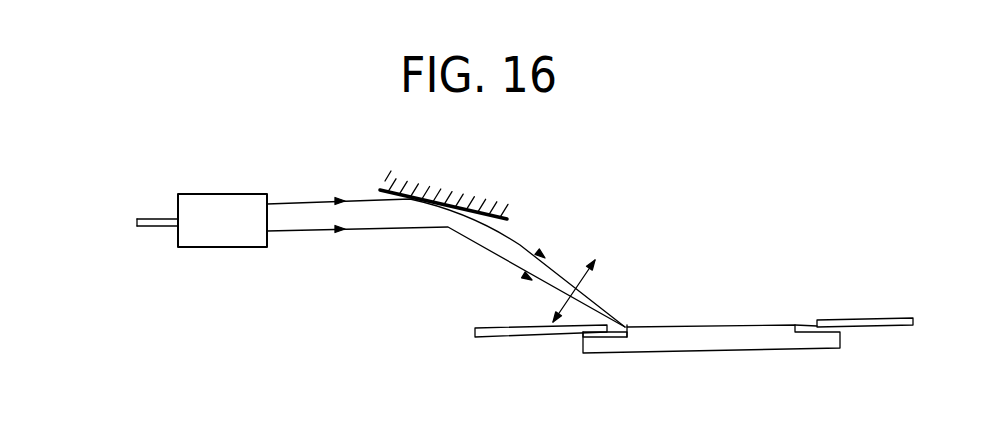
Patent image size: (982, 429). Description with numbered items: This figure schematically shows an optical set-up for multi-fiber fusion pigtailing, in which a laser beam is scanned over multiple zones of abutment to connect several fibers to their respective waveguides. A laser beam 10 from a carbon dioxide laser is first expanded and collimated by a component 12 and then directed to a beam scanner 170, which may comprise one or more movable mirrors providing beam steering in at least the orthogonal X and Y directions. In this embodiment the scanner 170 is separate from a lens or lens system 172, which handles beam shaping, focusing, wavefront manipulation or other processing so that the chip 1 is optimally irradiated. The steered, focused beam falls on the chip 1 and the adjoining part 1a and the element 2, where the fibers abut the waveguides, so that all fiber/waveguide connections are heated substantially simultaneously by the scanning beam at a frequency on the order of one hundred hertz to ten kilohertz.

The laser beam 10 is at (118, 231).
The component 12 is at (229, 262).
The beam scanner 170 is at (471, 171).
The lens or lens system 172 is at (631, 271).
The sheet / substrate 2 is at (516, 355).
The chip 1 is at (711, 339).
The substrate surface layer 1a is at (708, 364).